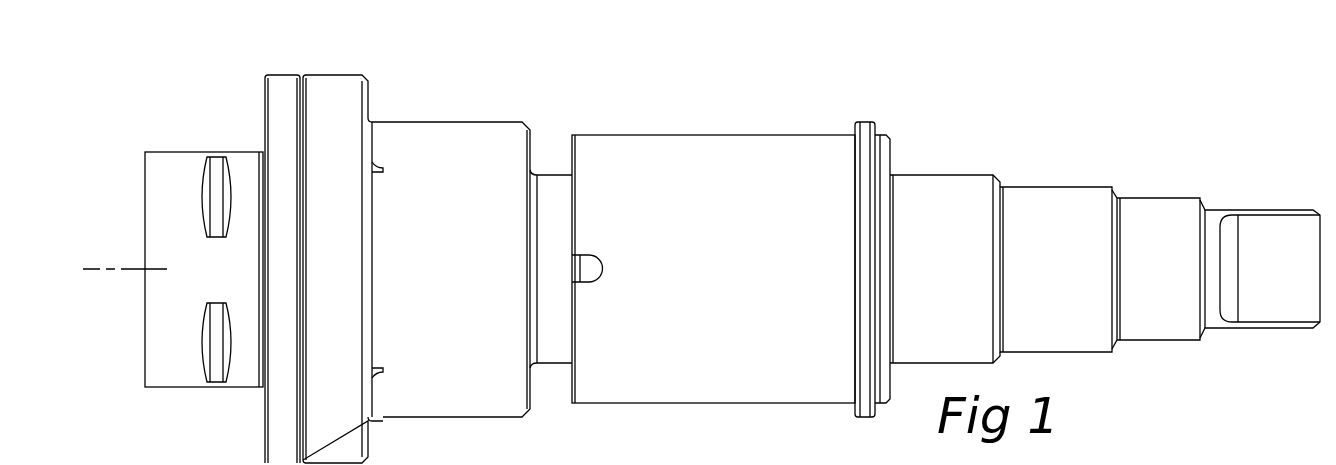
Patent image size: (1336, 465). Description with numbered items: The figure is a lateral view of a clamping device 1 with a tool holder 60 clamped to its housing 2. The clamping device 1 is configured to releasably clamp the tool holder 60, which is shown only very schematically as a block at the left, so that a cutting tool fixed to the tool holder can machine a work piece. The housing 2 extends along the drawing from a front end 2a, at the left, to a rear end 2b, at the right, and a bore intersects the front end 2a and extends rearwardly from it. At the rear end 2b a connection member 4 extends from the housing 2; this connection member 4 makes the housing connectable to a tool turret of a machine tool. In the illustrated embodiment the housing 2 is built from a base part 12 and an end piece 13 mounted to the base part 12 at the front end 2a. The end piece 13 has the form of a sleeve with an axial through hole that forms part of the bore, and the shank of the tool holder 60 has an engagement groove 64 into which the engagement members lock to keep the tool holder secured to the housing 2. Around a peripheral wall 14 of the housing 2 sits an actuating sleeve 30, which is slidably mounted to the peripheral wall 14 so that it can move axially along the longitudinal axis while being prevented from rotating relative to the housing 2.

The clamping device 1 is at (996, 113).
The housing 2 is at (539, 102).
The front end 2a is at (275, 70).
The rear end 2b is at (1200, 187).
The connection member 4 is at (1255, 313).
The base part 12 is at (443, 130).
The end piece 13 is at (278, 137).
The peripheral wall 14 is at (560, 355).
The actuating sleeve 30 is at (697, 148).
The tool holder 60 is at (183, 162).
The engagement groove 64 is at (343, 270).